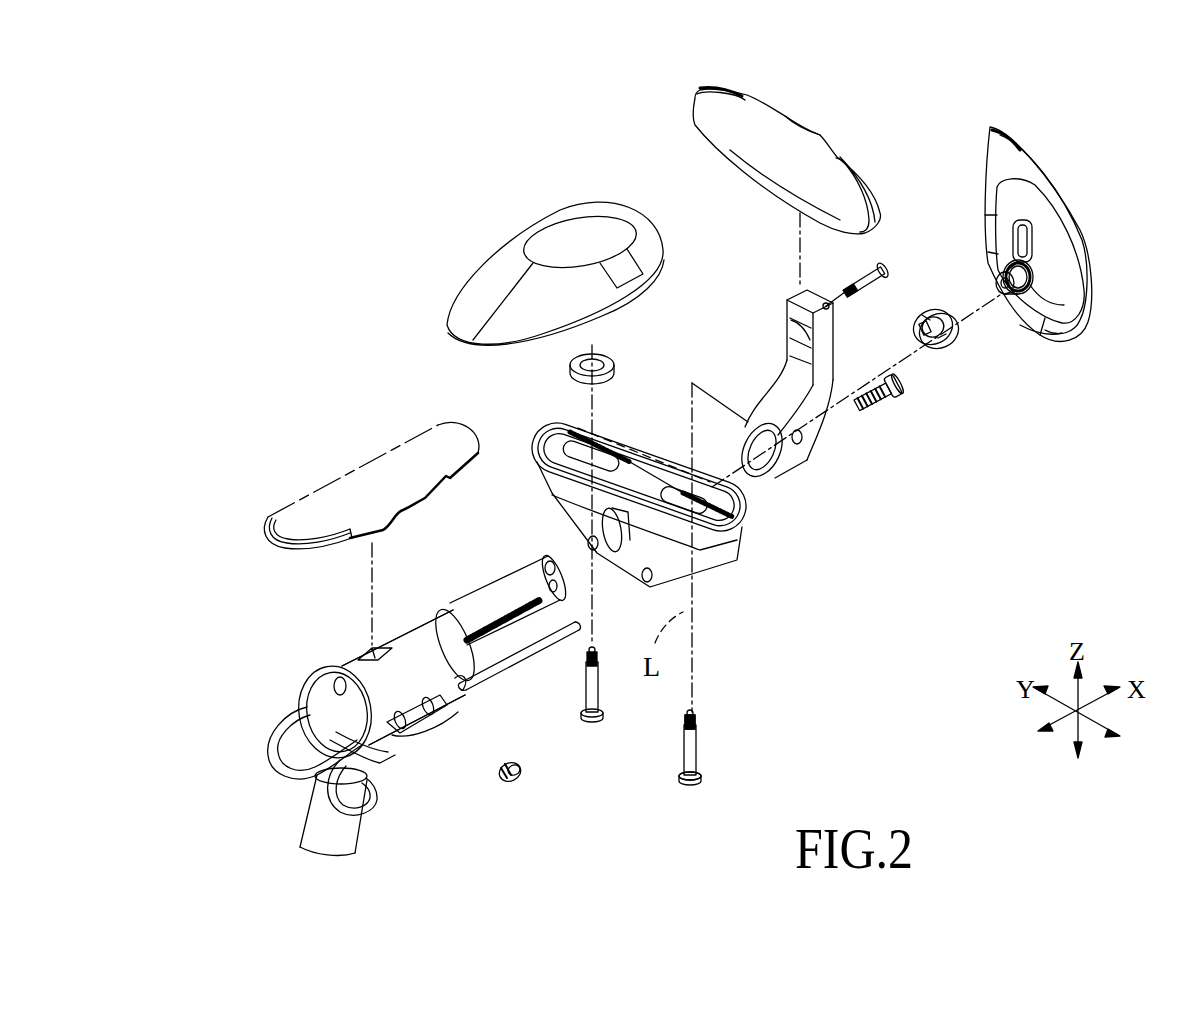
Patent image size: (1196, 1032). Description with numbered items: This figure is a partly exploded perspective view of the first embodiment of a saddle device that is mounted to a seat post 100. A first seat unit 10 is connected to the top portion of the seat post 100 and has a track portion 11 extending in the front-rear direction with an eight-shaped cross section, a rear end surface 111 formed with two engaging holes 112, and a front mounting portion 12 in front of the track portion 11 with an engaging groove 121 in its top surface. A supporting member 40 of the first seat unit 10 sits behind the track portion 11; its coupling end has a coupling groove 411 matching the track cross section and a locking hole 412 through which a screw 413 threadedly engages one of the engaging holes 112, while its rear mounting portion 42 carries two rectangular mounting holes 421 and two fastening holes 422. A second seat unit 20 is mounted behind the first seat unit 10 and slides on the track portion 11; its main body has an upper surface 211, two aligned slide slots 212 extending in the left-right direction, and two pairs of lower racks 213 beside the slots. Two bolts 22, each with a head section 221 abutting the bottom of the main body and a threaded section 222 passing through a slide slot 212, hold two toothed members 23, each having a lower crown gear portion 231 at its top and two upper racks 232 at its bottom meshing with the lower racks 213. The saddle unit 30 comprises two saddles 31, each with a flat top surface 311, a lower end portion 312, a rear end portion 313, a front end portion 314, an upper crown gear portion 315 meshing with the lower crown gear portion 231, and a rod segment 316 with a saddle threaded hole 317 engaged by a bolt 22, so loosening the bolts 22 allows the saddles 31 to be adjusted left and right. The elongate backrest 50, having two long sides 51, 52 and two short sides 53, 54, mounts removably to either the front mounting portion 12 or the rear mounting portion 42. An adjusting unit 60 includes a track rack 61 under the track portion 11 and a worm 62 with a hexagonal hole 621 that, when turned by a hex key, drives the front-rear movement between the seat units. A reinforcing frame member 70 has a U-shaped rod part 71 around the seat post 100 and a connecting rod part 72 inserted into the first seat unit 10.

The first seat unit 10 is at (453, 728).
The track portion 11 is at (507, 580).
The rear end surface 111 is at (545, 555).
The engaging holes 112 is at (549, 605).
The front mounting portion 12 is at (398, 633).
The engaging groove 121 is at (367, 646).
The second seat unit 20 is at (733, 598).
The upper surface 211 is at (638, 460).
The slide slots 212 is at (560, 437).
The lower racks 213 is at (575, 420).
The bolts 22 is at (600, 690).
The head section 221 is at (690, 785).
The threaded section 222 is at (683, 725).
The toothed members 23 is at (928, 348).
The lower crown gear portion 231 is at (575, 365).
The upper racks 232 is at (945, 318).
The saddle unit 30 is at (535, 222).
The flat top surface 311 is at (597, 225).
The saddles 31 is at (1085, 237).
The lower end portion 312 is at (1032, 278).
The rear end portion 313 is at (1037, 338).
The front end portion 314 is at (1012, 126).
The upper crown gear portion 315 is at (1064, 296).
The rod segment 316 is at (996, 279).
The saddle threaded hole 317 is at (1006, 268).
The supporting member 40 is at (797, 492).
The coupling groove 411 is at (765, 472).
The locking hole 412 is at (806, 474).
The screw 413 is at (893, 390).
The rear mounting portion 42 is at (790, 315).
The mounting holes 421 is at (790, 335).
The fastening holes 422 is at (827, 303).
The backrest 50 is at (808, 120).
The long side 51 is at (820, 136).
The long side 52 is at (760, 183).
The short side 53 is at (695, 98).
The short side 54 is at (870, 207).
The adjusting unit 60 is at (537, 778).
The track rack 61 is at (505, 625).
The worm 62 is at (512, 781).
The hexagonal hole 621 is at (500, 779).
The reinforcing frame member 70 is at (250, 739).
The U-shaped rod part 71 is at (378, 810).
The connecting rod part 72 is at (482, 676).
The seat post 100 is at (295, 824).